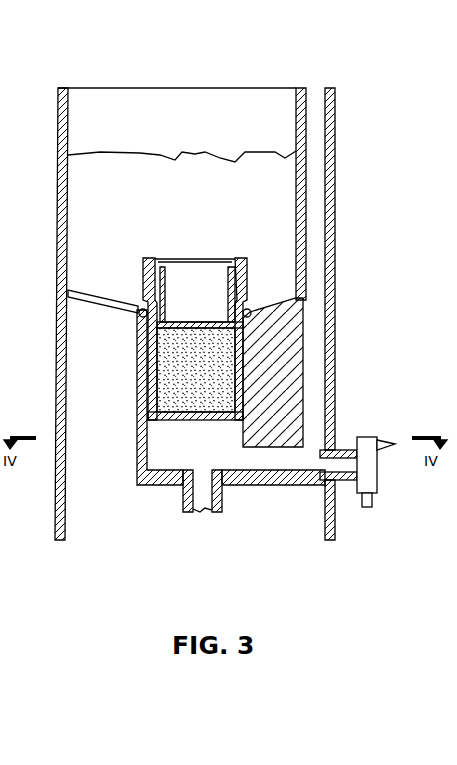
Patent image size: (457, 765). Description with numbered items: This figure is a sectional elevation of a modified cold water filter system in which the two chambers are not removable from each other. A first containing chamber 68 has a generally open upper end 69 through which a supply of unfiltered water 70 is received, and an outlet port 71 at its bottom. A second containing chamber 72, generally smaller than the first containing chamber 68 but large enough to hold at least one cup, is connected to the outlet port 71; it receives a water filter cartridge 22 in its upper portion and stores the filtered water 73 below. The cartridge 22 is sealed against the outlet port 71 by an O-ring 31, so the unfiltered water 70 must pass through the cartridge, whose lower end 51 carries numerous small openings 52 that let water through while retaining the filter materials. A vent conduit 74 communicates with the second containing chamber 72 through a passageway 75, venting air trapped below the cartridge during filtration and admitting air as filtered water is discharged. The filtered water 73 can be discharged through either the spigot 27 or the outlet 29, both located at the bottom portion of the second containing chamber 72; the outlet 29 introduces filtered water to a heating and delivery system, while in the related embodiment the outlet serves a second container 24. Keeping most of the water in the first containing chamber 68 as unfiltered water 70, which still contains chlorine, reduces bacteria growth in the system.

The water filter cartridge 22 is at (145, 248).
The second container 24 is at (139, 594).
The spigot 27 is at (385, 487).
The outlet 29 is at (198, 508).
The O-ring 31 is at (250, 308).
The lower end of second cylindrical chamber 51 is at (210, 322).
The small openings 52 is at (182, 322).
The first containing chamber 68 is at (68, 116).
The open upper end 69 is at (146, 90).
The unfiltered water 70 is at (143, 156).
The outlet port 71 is at (135, 290).
The second containing chamber 72 is at (150, 430).
The filtered water 73 is at (315, 150).
The vent conduit 74 is at (318, 336).
The passageway 75 is at (260, 460).